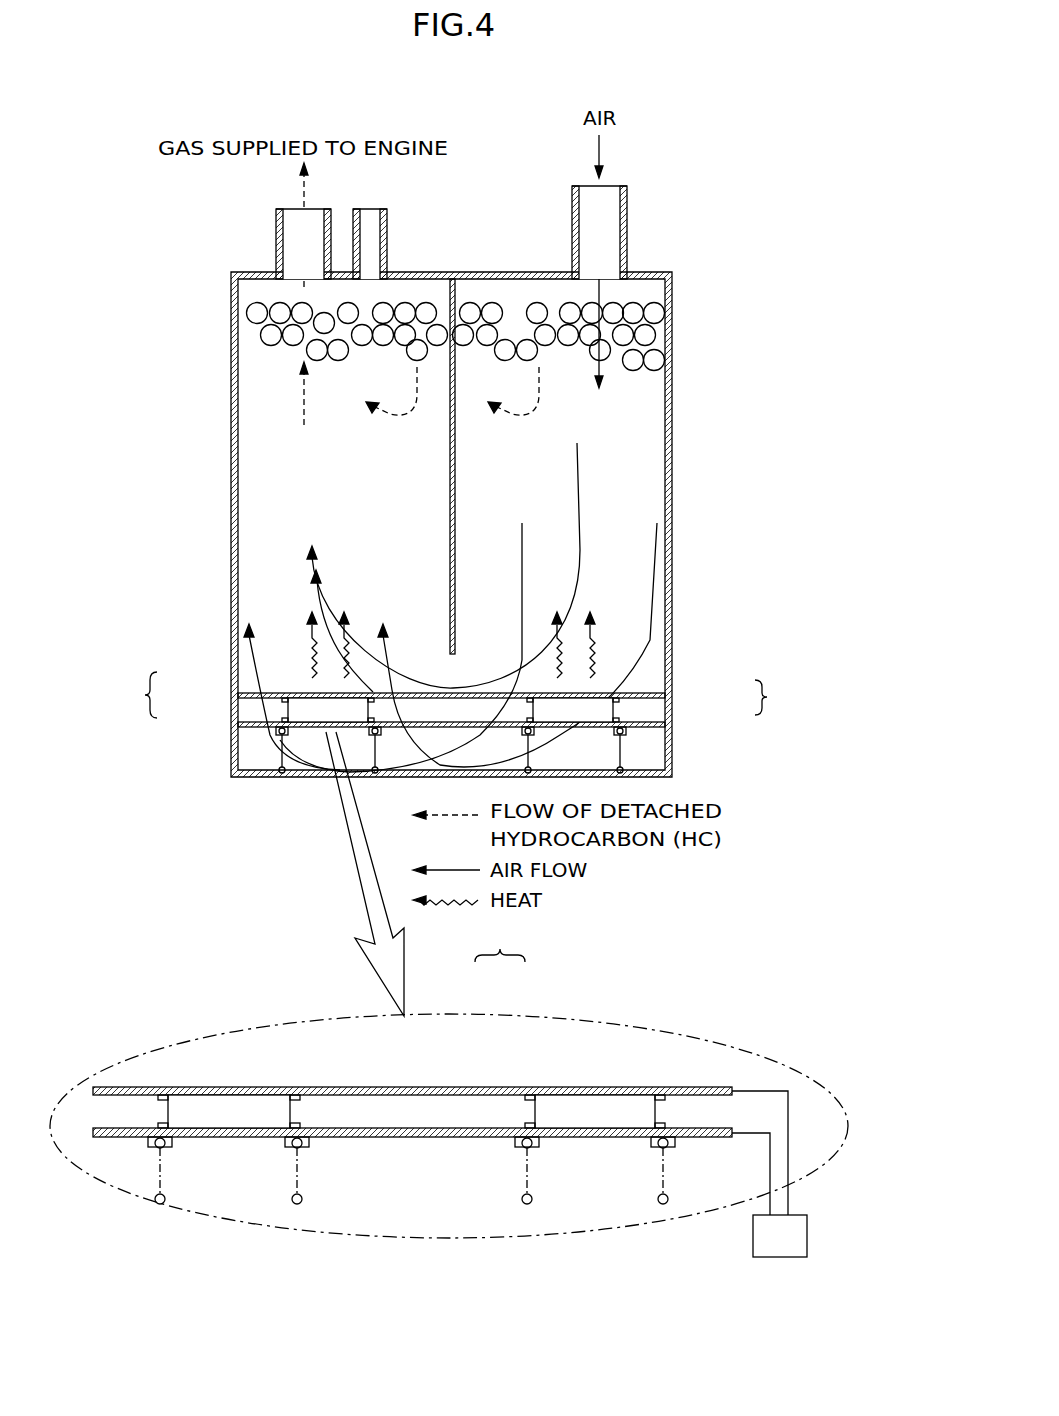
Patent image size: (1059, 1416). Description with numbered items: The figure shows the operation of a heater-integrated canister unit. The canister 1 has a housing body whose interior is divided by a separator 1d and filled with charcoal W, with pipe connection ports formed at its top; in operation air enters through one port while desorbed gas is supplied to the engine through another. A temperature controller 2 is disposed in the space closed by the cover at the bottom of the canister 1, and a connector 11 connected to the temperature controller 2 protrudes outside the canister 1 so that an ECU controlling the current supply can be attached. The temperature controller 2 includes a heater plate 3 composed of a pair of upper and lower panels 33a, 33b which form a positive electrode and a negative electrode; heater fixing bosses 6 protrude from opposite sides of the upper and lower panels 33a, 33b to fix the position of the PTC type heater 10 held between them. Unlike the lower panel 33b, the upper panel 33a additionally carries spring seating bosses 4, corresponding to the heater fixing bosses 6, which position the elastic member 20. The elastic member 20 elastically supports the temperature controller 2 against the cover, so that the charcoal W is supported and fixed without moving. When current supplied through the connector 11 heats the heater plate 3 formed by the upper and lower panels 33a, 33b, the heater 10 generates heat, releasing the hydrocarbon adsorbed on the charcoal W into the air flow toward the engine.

The canister 1 is at (672, 452).
The separator 1d is at (447, 466).
The temperature controller 2 is at (436, 967).
The heater plate 3 is at (439, 904).
The upper panel 33a is at (658, 720).
The lower panel 33b is at (658, 692).
The heater 10 is at (300, 705).
The elastic member 20 is at (283, 750).
The spring seating boss 4 is at (150, 1147).
The heater fixing boss 6 is at (160, 1125).
The connector 11 is at (777, 1258).
The charcoal W is at (658, 312).